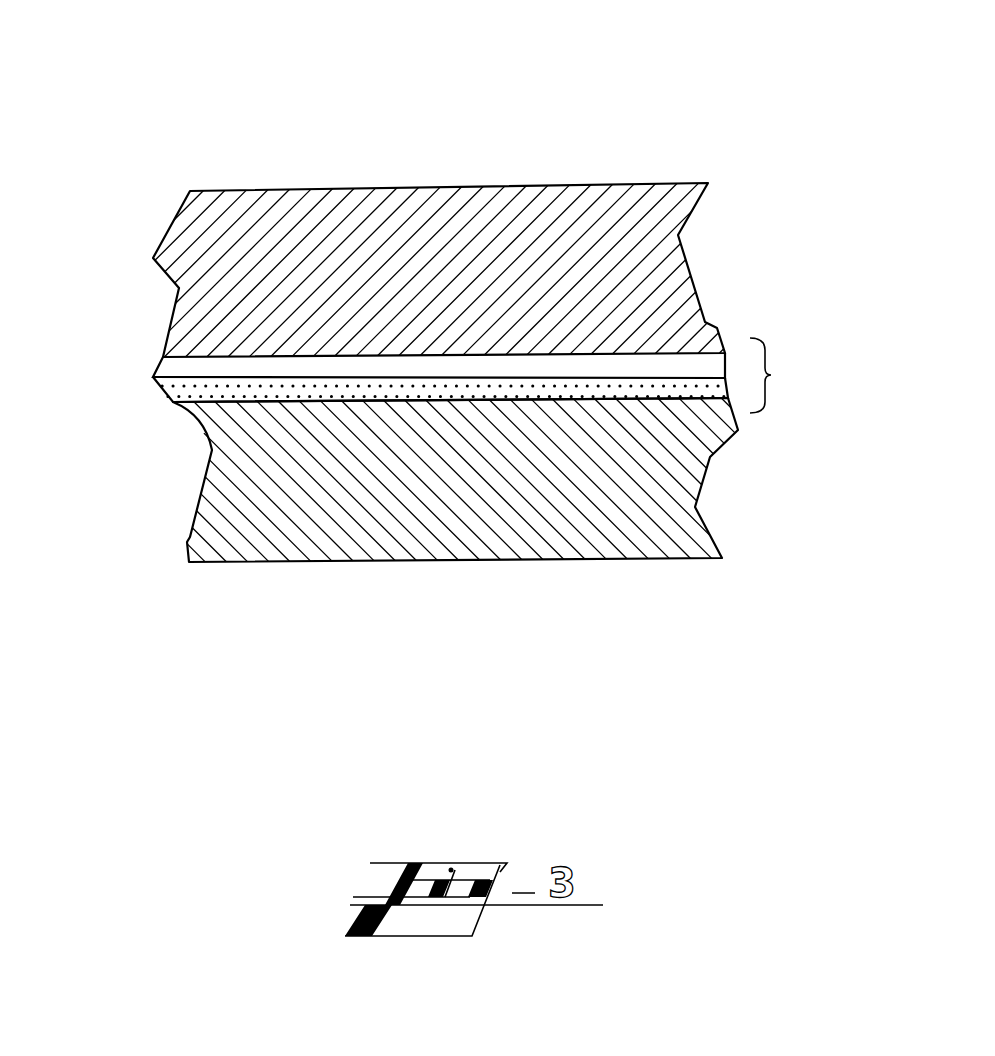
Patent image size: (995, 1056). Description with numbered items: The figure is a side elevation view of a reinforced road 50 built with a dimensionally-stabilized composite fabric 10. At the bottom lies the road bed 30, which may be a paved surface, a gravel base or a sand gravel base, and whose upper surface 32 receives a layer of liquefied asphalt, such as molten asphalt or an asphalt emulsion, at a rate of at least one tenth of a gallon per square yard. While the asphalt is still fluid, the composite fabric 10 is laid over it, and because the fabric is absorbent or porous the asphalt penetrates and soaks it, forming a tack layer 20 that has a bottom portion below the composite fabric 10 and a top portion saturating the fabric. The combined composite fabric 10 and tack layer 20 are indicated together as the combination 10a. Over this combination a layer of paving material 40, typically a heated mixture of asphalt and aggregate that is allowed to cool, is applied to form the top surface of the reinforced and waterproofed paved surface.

The composite fabric 10 is at (155, 377).
The composite fabric/tack layer combination 10a is at (795, 375).
The tack layer 20 is at (157, 387).
The road bed 30 is at (437, 562).
The surface of road bed 32 is at (673, 400).
The paving material 40 is at (533, 186).
The reinforced road 50 is at (333, 75).